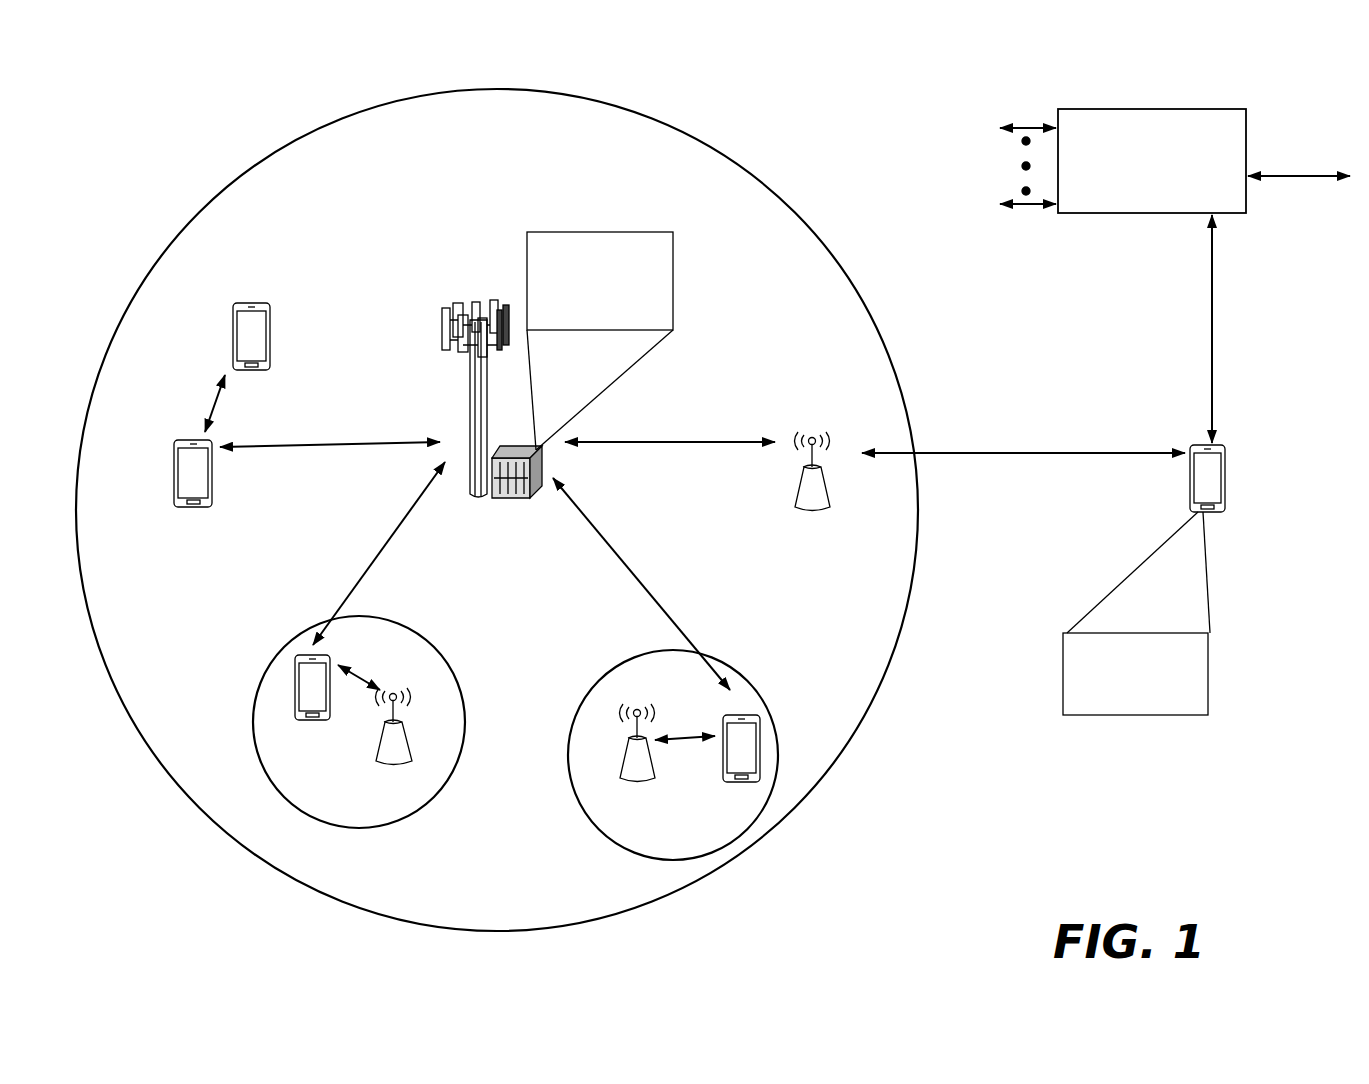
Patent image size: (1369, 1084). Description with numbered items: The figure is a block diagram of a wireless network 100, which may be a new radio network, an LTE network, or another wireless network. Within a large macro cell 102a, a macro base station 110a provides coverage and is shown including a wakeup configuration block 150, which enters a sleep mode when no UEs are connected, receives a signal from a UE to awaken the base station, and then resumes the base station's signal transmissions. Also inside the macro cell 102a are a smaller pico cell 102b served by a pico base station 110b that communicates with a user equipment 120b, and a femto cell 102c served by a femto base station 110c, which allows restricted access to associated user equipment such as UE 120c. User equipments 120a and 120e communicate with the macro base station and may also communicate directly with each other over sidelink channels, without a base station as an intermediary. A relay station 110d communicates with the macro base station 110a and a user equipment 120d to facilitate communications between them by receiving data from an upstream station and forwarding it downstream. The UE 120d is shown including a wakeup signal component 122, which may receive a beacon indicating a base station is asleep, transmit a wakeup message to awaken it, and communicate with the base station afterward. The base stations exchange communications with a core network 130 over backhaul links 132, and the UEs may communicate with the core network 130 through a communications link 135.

The wireless network 100 is at (150, 130).
The macro cell 102a is at (776, 196).
The pico cell 102b is at (450, 658).
The femto cell 102c is at (610, 668).
The macro base station 110a is at (484, 290).
The pico base station 110b is at (412, 748).
The femto base station 110c is at (622, 764).
The relay station 110d is at (813, 430).
The user equipment 120a is at (172, 468).
The user equipment 120b is at (300, 722).
The user equipment 120c is at (728, 784).
The user equipment 120d is at (1222, 514).
The user equipment 120e is at (233, 320).
The wakeup signal component 122 is at (1137, 717).
The core network 130 is at (1122, 106).
The backhaul links 132 is at (1023, 122).
The communications link 135 is at (1213, 340).
The wakeup configuration block 150 is at (673, 250).